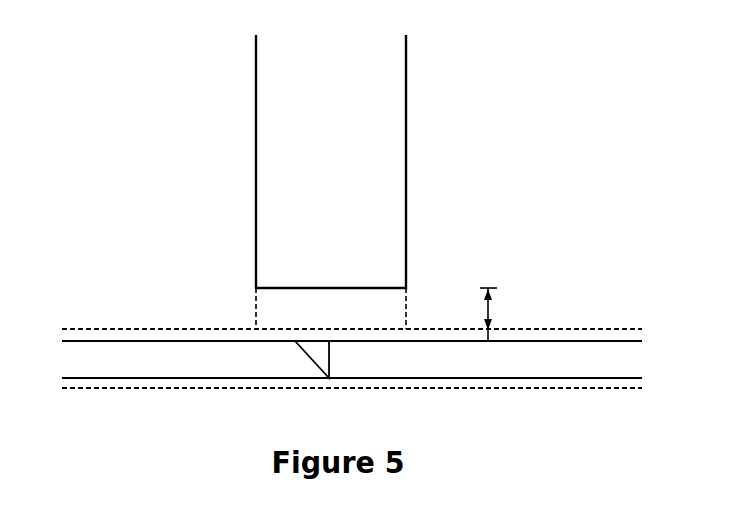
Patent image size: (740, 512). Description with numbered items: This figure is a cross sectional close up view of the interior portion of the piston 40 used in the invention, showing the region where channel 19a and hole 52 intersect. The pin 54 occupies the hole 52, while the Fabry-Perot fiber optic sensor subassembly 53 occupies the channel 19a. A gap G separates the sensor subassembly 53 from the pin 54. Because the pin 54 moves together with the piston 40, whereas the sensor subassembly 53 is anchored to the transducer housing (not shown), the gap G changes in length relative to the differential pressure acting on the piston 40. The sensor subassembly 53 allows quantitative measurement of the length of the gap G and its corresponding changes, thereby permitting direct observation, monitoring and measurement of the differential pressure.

The pin 54 is at (345, 150).
The hole 52 is at (290, 309).
The channel 19a is at (417, 337).
The Fabry-Perot fiber optic sensor subassembly 53 is at (235, 362).
The piston 40 is at (152, 126).
The gap G is at (489, 316).